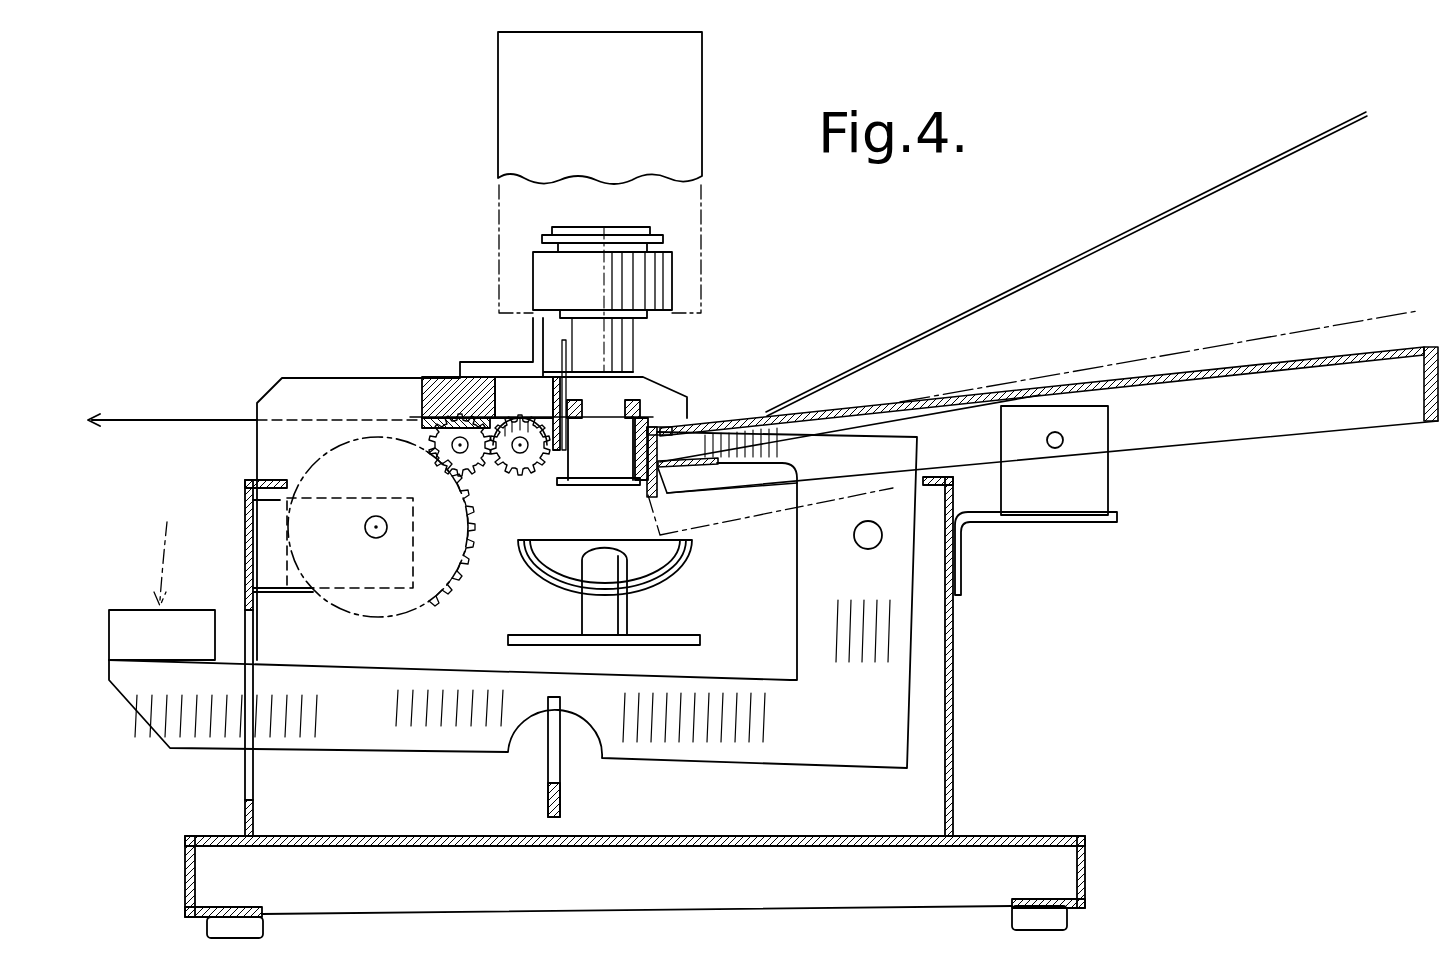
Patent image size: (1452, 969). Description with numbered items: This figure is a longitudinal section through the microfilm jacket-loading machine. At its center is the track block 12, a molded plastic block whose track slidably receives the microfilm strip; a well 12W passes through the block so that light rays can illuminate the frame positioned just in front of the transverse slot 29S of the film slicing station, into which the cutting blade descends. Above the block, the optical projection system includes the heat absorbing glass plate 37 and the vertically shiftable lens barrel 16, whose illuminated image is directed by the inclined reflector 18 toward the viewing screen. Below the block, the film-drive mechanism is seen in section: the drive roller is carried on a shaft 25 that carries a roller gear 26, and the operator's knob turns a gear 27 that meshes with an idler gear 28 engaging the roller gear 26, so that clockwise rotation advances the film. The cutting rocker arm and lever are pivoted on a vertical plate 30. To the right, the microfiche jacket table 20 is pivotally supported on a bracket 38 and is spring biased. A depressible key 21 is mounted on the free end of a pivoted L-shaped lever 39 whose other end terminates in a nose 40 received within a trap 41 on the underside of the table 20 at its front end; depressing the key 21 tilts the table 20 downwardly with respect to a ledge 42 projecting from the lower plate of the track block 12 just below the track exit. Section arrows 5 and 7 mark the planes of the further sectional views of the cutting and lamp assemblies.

The section line 5- 5 is at (550, 332).
The section line 7- 7 is at (602, 138).
The track block 12 is at (351, 396).
The well 12W is at (612, 400).
The lens barrel 16 is at (672, 281).
The inclined reflector 18 is at (702, 145).
The table 20 is at (1437, 350).
The depressible key 21 is at (195, 620).
The shaft 25 is at (524, 447).
The roller gear 26 is at (527, 480).
The gear 27 is at (440, 566).
The idler gear 28 is at (471, 477).
The transverse slot 29S is at (556, 412).
The vertical plate 30 is at (677, 562).
The heat absorbing glass plate 37 is at (610, 486).
The bracket 38 is at (1108, 496).
The L-shaped lever 39 is at (852, 768).
The nose 40 is at (765, 412).
The trap 41 is at (711, 471).
The ledge 42 is at (656, 424).